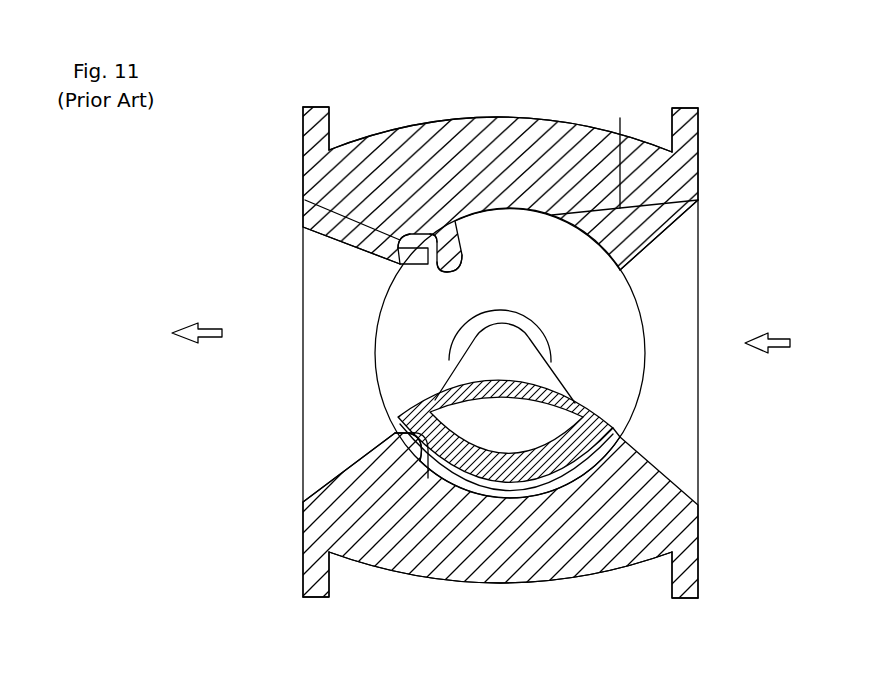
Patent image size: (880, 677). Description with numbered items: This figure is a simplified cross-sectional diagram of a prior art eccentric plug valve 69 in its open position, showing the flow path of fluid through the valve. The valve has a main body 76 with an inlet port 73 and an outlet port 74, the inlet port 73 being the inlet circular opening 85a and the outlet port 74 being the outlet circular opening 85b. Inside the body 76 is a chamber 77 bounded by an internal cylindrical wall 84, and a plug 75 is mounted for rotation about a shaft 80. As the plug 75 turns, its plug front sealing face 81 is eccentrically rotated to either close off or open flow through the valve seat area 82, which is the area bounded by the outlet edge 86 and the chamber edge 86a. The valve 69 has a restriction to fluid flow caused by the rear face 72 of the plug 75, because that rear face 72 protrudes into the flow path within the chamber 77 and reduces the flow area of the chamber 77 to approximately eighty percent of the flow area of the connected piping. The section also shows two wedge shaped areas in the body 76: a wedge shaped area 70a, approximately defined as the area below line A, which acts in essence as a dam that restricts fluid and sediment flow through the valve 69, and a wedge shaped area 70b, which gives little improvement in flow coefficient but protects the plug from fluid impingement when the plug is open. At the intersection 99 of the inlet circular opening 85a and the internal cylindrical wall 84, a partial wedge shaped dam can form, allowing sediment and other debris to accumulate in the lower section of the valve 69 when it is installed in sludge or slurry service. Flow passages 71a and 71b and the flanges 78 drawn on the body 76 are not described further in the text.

The eccentric plug valve 69 is at (178, 397).
The wedge shaped area 70a is at (665, 228).
The wedge shaped area 70b is at (627, 515).
The inlet flow passage 71a is at (668, 328).
The outlet flow passage 71b is at (343, 340).
The rear face 72 is at (597, 403).
The inlet port 73 is at (790, 355).
The outlet port 74 is at (183, 349).
The plug 75 is at (514, 428).
The main body 76 is at (547, 125).
The chamber 77 is at (514, 239).
The flange 78 is at (700, 120).
The shaft 80 is at (468, 322).
The plug front sealing face 81 is at (433, 547).
The valve seat area 82 is at (458, 233).
The internal cylindrical wall 84 is at (625, 234).
The inlet circular opening 85a is at (305, 200).
The outlet circular opening 85b is at (303, 503).
The outlet edge 86 is at (303, 227).
The chamber edge 86a is at (439, 220).
The intersection 99 is at (620, 270).
The line A is at (620, 120).